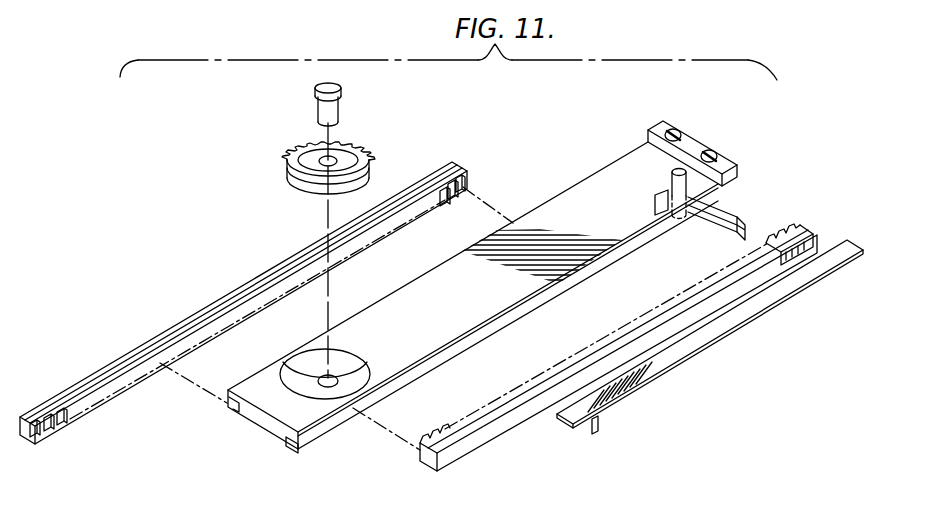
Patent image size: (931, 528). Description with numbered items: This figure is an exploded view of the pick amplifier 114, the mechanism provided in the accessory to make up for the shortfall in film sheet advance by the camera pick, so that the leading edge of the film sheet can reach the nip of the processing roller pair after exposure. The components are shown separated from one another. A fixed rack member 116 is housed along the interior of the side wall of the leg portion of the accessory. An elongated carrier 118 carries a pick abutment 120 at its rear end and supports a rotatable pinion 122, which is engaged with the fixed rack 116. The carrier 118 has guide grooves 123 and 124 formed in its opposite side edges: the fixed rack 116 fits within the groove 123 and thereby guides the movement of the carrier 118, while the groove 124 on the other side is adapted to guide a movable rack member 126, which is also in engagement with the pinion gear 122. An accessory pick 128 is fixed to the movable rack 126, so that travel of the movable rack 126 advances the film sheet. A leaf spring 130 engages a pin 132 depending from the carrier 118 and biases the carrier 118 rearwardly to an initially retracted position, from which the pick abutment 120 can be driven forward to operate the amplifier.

The pick amplifier 114 is at (590, 113).
The fixed rack member 116 is at (217, 325).
The elongated carrier 118 is at (471, 312).
The pick abutment 120 is at (693, 147).
The rotatable pinion 122 is at (350, 167).
The guide groove 123 is at (230, 405).
The guide groove 124 is at (293, 454).
The movable rack member 126 is at (475, 428).
The accessory pick 128 is at (600, 425).
The leaf spring 130 is at (737, 217).
The pin 132 is at (678, 195).